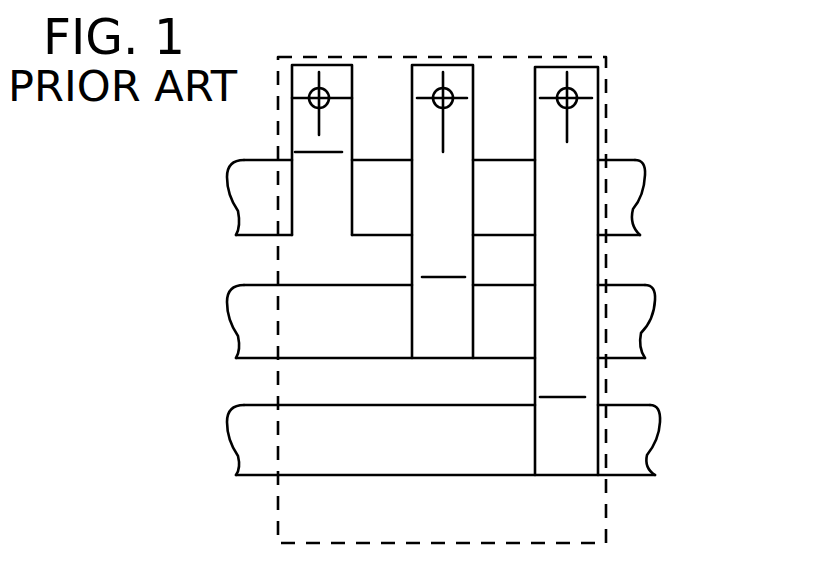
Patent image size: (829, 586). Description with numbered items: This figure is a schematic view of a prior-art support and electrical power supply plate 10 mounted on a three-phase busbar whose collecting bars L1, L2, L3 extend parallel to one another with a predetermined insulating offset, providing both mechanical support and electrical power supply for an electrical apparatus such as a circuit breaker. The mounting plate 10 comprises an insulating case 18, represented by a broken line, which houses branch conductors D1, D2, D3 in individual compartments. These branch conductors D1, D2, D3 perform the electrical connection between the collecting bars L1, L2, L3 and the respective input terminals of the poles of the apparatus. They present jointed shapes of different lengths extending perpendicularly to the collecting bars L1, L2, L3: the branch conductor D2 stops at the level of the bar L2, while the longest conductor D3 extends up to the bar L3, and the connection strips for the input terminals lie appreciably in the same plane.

The support and power supply plate 10 is at (615, 505).
The insulating case 18 is at (278, 505).
The branch conductor D1 is at (338, 126).
The branch conductor D2 is at (460, 126).
The branch conductor D3 is at (581, 127).
The collecting bar L1 is at (256, 193).
The collecting bar L2 is at (256, 318).
The collecting bar L3 is at (256, 436).